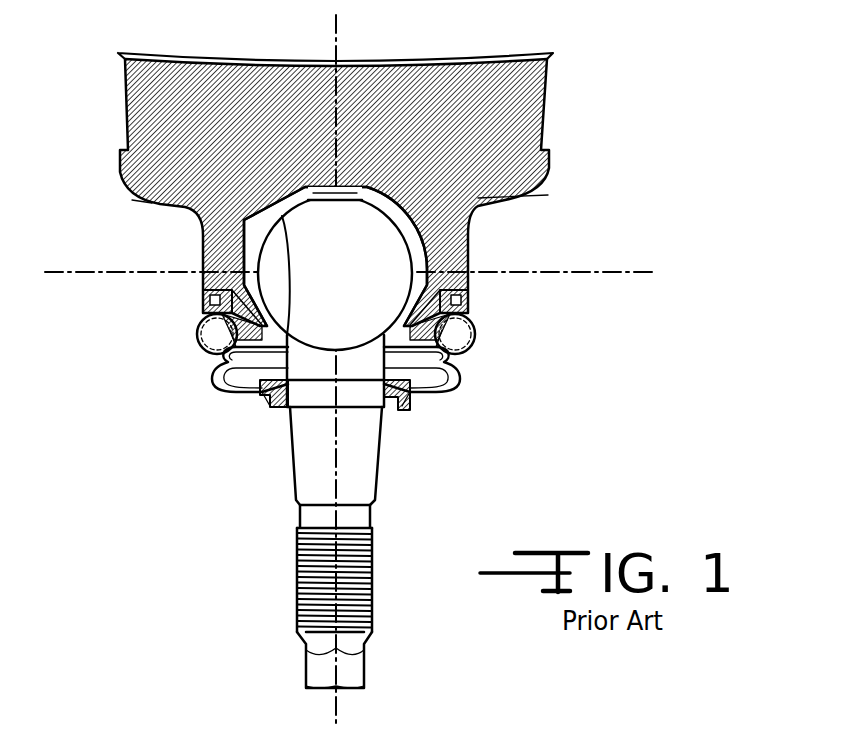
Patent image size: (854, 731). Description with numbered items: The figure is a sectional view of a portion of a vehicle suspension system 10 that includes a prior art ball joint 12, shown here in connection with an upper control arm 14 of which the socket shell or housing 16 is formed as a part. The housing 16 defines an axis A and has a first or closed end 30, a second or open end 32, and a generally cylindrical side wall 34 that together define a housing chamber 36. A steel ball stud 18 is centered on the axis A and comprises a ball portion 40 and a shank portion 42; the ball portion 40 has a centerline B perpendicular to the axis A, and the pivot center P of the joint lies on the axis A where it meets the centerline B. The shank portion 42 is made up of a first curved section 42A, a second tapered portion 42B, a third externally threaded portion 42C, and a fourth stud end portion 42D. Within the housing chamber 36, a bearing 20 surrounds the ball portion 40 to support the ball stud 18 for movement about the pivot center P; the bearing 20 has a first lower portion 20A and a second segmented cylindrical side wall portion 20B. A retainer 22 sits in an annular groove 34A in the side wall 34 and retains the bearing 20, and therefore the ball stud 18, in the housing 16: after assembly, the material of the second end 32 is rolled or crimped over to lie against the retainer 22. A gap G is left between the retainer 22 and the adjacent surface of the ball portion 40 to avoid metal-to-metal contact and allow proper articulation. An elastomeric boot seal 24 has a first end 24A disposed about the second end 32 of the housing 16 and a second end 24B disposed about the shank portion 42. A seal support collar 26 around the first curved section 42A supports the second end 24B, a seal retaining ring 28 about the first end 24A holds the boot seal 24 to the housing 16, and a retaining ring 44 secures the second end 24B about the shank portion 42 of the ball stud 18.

The vehicle suspension system 10 is at (596, 110).
The ball joint 12 is at (391, 511).
The upper control arm 14 is at (190, 113).
The housing 16 is at (480, 197).
The ball stud 18 is at (280, 482).
The bearing 20 is at (418, 237).
The first lower portion 20A is at (284, 213).
The second segmented cylindrical side wall portion 20B is at (257, 247).
The retainer 22 is at (462, 330).
The boot seal 24 is at (333, 359).
The first end 24A is at (275, 395).
The second end 24B is at (548, 272).
The seal support collar 26 is at (455, 362).
The seal retaining ring 28 is at (440, 300).
The first closed end 30 is at (381, 235).
The second open end 32 is at (197, 350).
The side wall 34 is at (217, 277).
The annular groove 34A is at (253, 323).
The housing chamber 36 is at (262, 392).
The ball portion 40 is at (407, 205).
The shank portion 42 is at (373, 517).
The first curved section 42A is at (381, 335).
The second tapered portion 42B is at (380, 473).
The third externally threaded portion 42C is at (372, 572).
The fourth stud end portion 42D is at (365, 665).
The retaining ring 44 is at (268, 400).
The axis A is at (343, 38).
The centerline B is at (601, 275).
The gap G is at (205, 283).
The pivot center P is at (336, 270).